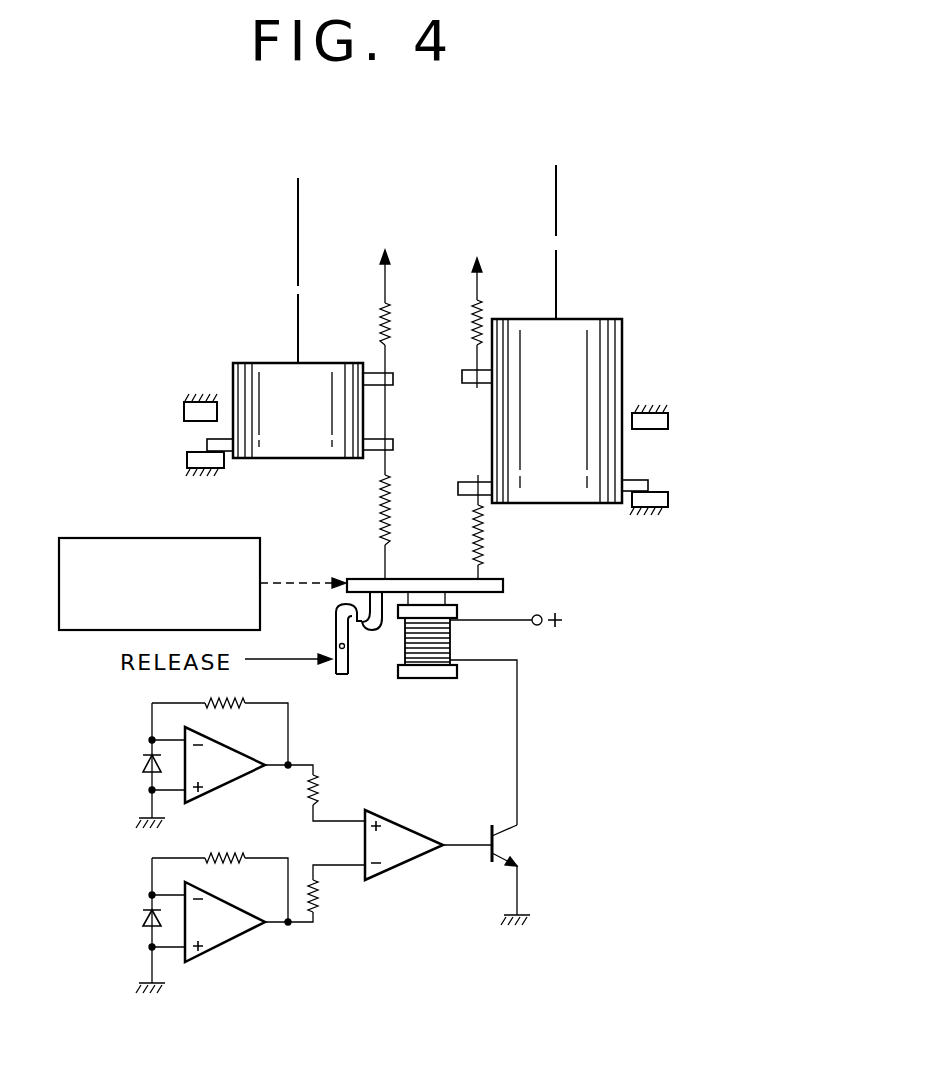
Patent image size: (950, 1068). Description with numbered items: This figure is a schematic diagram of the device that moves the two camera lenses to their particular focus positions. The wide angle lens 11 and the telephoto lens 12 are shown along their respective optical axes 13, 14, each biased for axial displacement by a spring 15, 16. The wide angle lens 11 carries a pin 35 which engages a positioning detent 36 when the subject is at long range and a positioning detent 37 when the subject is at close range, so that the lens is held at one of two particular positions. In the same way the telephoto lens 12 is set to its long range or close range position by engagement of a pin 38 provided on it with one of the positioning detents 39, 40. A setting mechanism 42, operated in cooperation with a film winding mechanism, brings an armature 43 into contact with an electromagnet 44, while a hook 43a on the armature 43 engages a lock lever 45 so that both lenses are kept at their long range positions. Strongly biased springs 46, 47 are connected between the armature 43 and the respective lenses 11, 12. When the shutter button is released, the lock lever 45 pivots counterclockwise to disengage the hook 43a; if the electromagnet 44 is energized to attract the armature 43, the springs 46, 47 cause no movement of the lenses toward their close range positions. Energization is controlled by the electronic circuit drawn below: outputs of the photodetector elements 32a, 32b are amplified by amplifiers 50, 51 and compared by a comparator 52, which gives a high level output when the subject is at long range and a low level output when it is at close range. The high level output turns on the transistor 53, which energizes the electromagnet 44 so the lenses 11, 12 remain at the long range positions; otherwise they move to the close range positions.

The wide angle lens 11 is at (266, 363).
The telephoto lens 12 is at (598, 358).
The optical axis 13 is at (297, 211).
The optical axis 14 is at (556, 199).
The spring 15 is at (378, 323).
The spring 16 is at (470, 325).
The photodetector element 32a is at (143, 914).
The photodetector element 32b is at (143, 758).
The pin 35 is at (215, 445).
The positioning detent 36 is at (195, 462).
The positioning detent 37 is at (190, 402).
The stop tab 38 is at (640, 485).
The positioning detent 39 is at (668, 500).
The positioning detent 40 is at (668, 418).
The setting mechanism 42 is at (237, 538).
The armature 43 is at (497, 583).
The hook 43a is at (370, 628).
The electromagnet 44 is at (432, 668).
The lock lever 45 is at (337, 674).
The spring 46 is at (378, 525).
The spring 47 is at (472, 548).
The amplifier 50 is at (225, 930).
The amplifier 51 is at (225, 775).
The comparator 52 is at (405, 858).
The transistor 53 is at (490, 832).